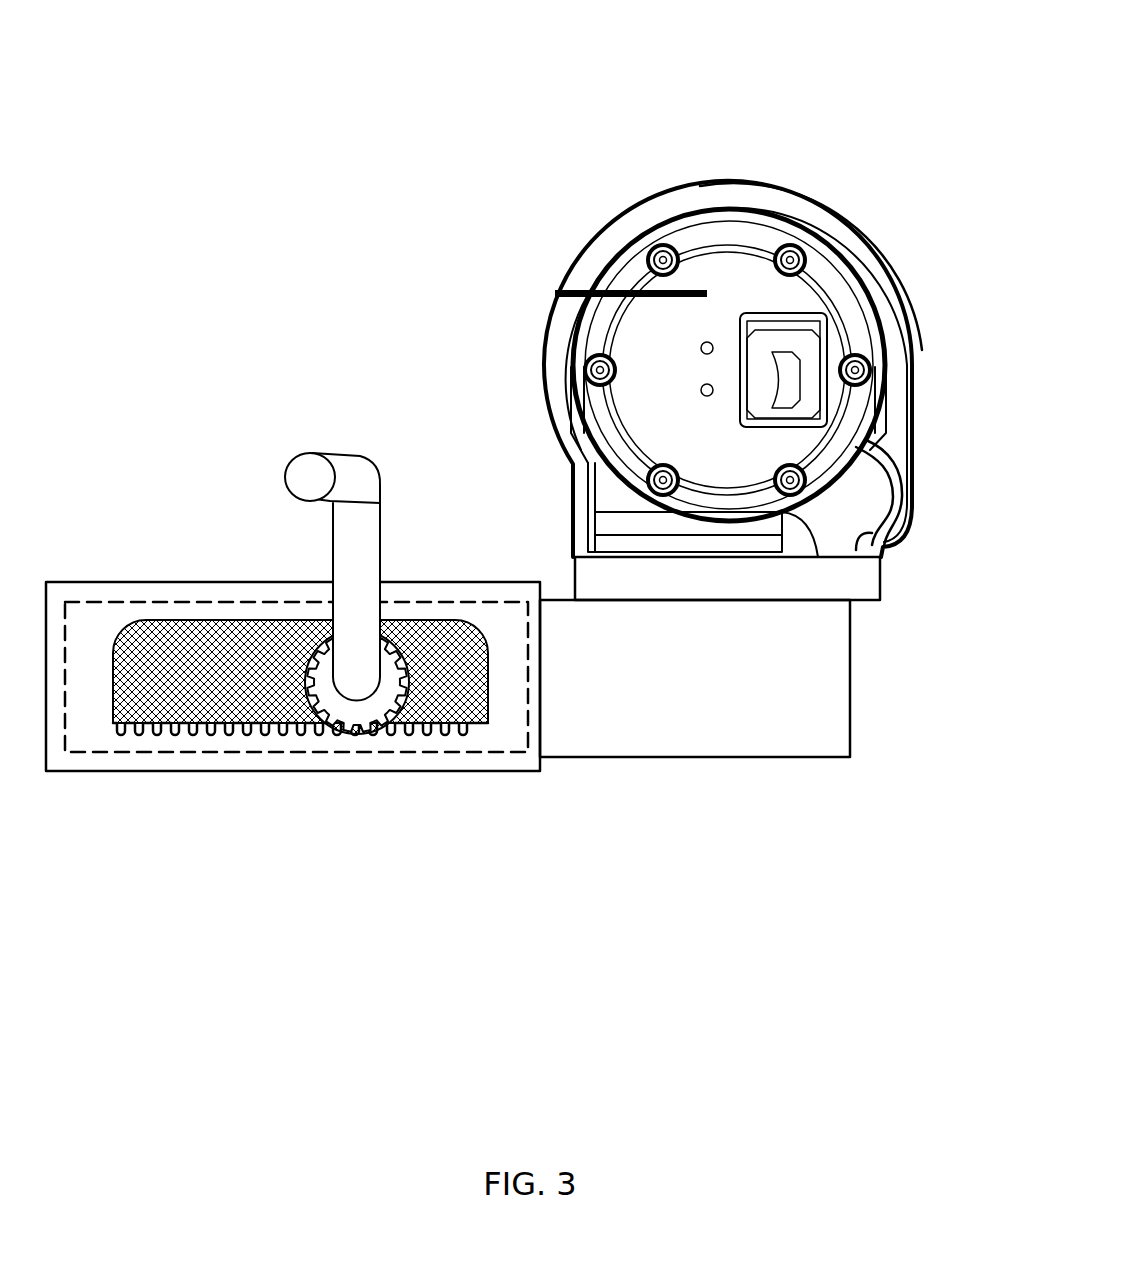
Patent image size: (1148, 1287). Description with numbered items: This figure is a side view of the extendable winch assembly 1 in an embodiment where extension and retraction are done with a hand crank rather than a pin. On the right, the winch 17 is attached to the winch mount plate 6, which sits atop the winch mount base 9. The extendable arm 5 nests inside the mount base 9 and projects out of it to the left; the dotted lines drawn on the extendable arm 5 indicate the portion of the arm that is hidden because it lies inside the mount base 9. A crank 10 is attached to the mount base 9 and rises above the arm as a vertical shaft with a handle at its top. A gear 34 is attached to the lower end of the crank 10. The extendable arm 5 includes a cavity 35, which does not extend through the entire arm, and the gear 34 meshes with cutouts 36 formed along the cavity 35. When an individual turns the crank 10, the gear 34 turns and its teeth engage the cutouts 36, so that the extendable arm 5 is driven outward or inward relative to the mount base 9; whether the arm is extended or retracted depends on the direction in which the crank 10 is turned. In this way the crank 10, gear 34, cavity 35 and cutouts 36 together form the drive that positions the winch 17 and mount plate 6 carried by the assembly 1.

The extendable winch assembly 1 is at (710, 281).
The extendable arm 5 is at (518, 745).
The winch mount plate 6 is at (868, 586).
The winch mount base 9 is at (60, 592).
The crank 10 is at (348, 452).
The winch 17 is at (585, 252).
The gear 34 is at (392, 668).
The cavity 35 is at (163, 690).
The cutouts 36 is at (235, 726).